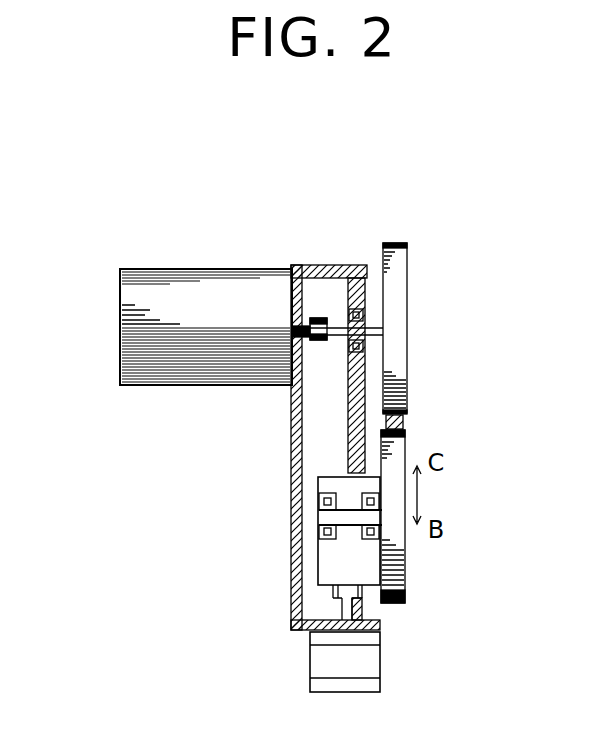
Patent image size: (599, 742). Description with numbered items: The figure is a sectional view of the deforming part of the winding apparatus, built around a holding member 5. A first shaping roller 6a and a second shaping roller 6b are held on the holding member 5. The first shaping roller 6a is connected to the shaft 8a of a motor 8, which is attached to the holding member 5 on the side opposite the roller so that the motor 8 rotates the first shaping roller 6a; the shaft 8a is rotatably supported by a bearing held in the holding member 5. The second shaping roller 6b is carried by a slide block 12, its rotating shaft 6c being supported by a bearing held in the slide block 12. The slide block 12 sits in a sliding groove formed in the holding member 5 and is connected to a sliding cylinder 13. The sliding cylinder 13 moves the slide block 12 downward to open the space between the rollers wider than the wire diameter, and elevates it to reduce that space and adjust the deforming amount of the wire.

The holding member 5 is at (337, 265).
The motor 8 is at (156, 318).
The shaft 8a is at (336, 318).
The first shaping roller 6a is at (397, 299).
The second shaping roller 6b is at (404, 444).
The rotating shaft 6c is at (318, 522).
The slide block 12 is at (367, 568).
The sliding cylinder 13 is at (368, 665).